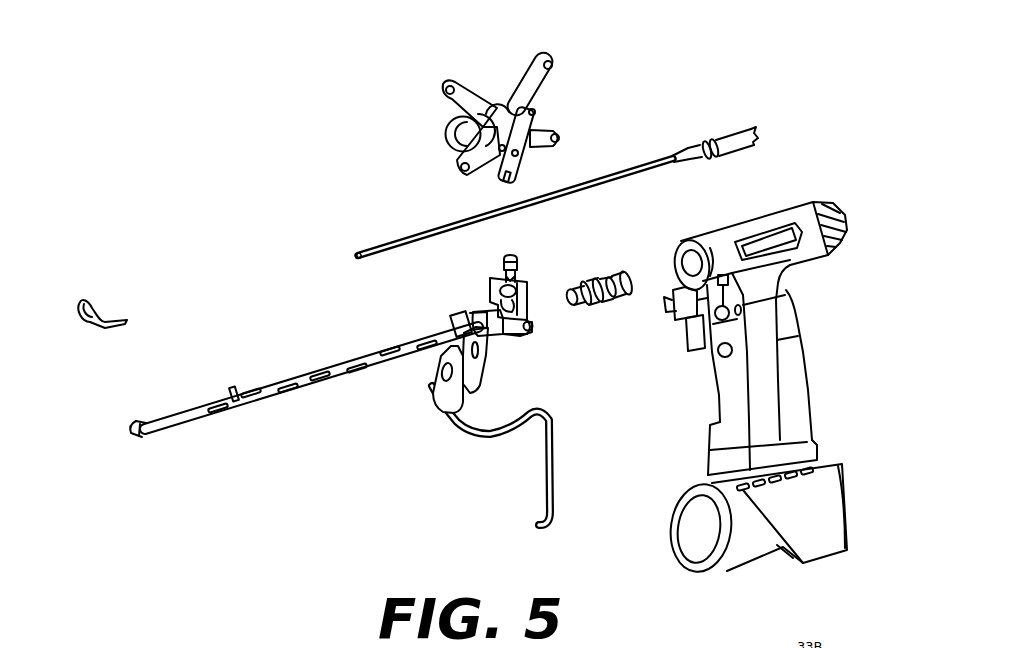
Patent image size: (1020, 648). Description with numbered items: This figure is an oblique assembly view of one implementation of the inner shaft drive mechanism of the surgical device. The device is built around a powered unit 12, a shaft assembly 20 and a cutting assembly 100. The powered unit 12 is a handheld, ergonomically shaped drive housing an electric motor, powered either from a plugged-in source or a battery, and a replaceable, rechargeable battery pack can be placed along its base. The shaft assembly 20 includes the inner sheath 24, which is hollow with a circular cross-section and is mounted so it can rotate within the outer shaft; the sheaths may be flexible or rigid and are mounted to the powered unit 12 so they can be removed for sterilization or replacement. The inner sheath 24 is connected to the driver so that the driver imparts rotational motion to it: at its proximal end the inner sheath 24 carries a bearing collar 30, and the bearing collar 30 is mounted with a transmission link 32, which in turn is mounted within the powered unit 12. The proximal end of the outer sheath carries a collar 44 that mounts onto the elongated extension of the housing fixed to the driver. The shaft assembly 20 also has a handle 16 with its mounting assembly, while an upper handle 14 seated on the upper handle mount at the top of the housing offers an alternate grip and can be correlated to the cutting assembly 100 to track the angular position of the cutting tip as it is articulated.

The powered unit 12 is at (800, 348).
The upper handle 14 is at (551, 62).
The handle 16 is at (497, 423).
The shaft assembly 20 is at (306, 350).
The inner sheath 24 is at (576, 182).
The bearing collar 30 is at (752, 134).
The transmission link 32 is at (613, 276).
The collar 44 is at (463, 312).
The cutting assembly 100 is at (115, 302).